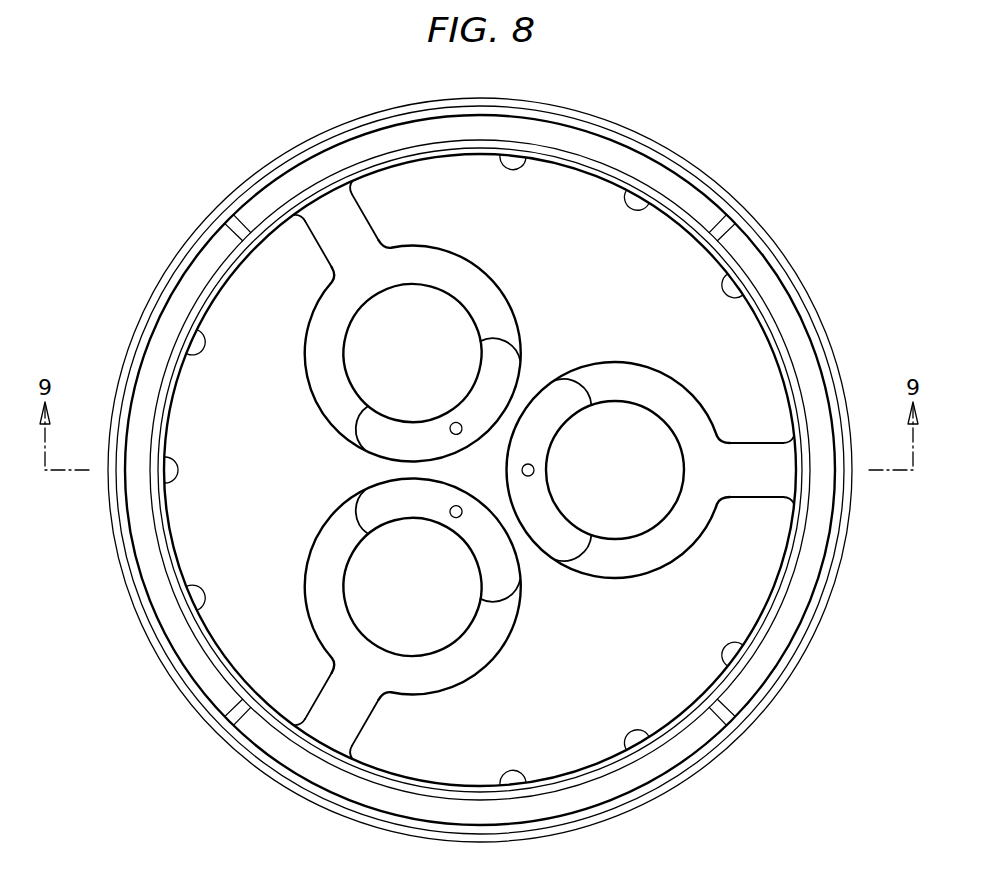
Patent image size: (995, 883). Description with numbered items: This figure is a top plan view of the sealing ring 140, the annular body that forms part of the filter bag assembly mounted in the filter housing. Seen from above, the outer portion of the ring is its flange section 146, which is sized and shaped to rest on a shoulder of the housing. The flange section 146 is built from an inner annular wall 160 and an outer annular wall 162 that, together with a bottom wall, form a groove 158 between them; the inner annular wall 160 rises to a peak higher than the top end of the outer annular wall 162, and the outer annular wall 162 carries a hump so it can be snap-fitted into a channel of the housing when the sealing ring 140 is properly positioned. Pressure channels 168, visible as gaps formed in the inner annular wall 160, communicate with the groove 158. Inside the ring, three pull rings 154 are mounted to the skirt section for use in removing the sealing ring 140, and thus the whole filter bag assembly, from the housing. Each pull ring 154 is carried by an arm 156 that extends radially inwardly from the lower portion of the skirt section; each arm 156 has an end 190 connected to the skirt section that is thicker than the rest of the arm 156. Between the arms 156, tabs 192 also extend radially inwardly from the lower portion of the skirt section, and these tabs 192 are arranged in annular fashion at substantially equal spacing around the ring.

The sealing ring 140 is at (168, 236).
The flange section 146 is at (128, 629).
The pull rings 154 is at (480, 288).
The arms 156 is at (352, 228).
The groove 158 is at (277, 767).
The inner annular wall 160 is at (805, 352).
The outer annular wall 162 is at (725, 192).
The pressure channels 168 is at (713, 216).
The end 190 is at (318, 204).
The tabs 192 is at (515, 162).